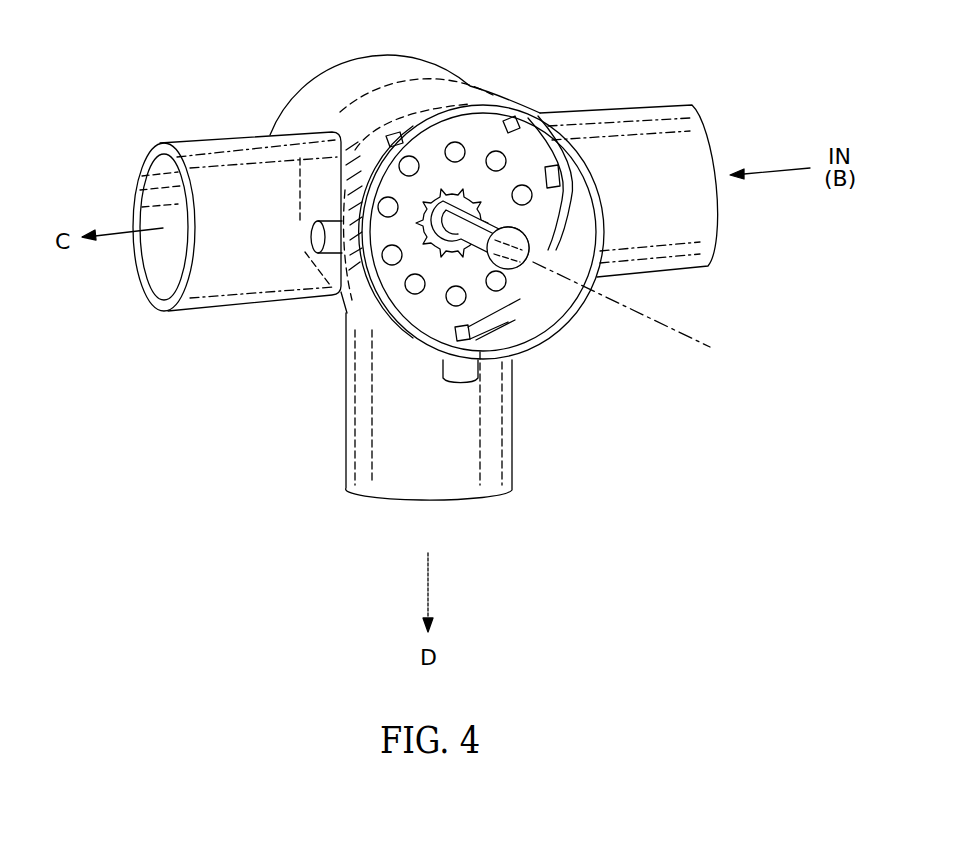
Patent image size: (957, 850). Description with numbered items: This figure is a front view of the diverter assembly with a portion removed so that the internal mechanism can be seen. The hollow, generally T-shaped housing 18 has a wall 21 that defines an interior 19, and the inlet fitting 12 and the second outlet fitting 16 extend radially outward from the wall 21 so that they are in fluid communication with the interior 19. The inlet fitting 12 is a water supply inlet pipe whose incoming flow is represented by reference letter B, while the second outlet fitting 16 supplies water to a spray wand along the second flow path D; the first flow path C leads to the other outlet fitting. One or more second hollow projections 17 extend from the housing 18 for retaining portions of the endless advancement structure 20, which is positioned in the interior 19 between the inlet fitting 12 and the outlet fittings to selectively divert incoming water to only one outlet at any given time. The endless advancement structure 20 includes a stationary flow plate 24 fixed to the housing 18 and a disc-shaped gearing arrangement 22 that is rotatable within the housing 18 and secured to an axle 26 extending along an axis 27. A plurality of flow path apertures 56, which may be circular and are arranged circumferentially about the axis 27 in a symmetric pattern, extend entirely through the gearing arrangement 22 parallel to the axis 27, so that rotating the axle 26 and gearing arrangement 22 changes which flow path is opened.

The inlet fitting 12 is at (690, 273).
The second outlet fitting 16 is at (447, 489).
The second hollow projections 17 is at (314, 237).
The housing 18 is at (367, 78).
The interior 19 is at (530, 299).
The endless advancement structure 20 is at (482, 146).
The wall 21 is at (410, 72).
The gearing arrangement 22 is at (383, 227).
The stationary flow plate 24 is at (352, 124).
The axle 26 is at (485, 228).
The axis 27 is at (693, 345).
The flow path apertures 56 is at (400, 293).